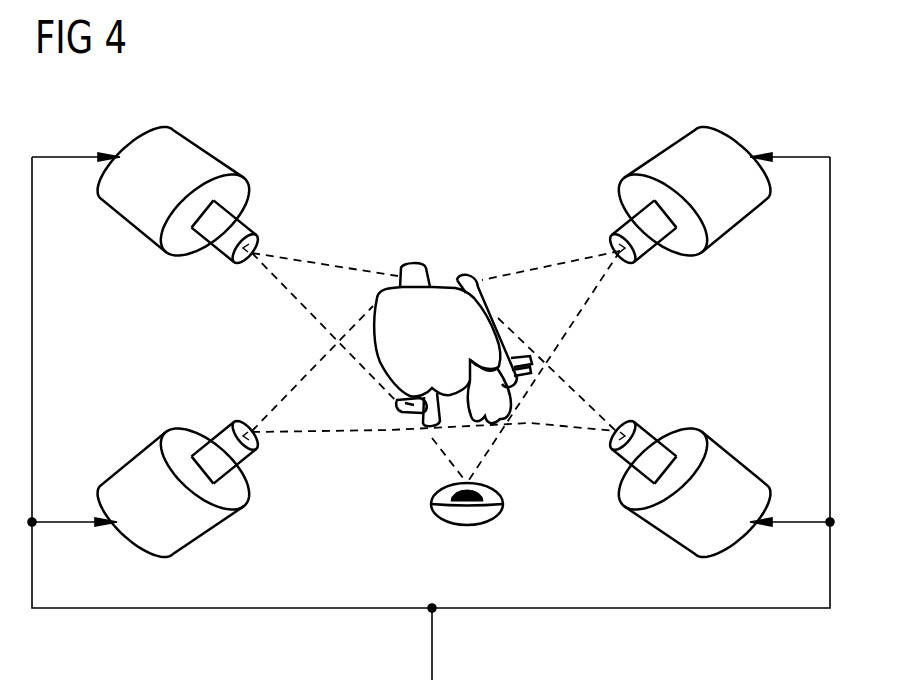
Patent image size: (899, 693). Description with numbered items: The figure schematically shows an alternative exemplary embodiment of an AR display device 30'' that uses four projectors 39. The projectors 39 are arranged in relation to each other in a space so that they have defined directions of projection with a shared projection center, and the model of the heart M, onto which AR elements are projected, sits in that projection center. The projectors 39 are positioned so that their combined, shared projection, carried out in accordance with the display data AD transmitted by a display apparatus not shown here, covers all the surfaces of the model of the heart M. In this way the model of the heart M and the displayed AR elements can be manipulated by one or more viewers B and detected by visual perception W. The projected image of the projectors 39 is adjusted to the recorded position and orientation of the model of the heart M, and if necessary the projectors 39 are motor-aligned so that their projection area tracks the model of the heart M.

The AR display device 30'' is at (431, 317).
The projector 39 is at (137, 229).
The model of the heart M is at (439, 287).
The viewer B is at (467, 539).
The visual perception W is at (467, 526).
The display data AD is at (434, 648).